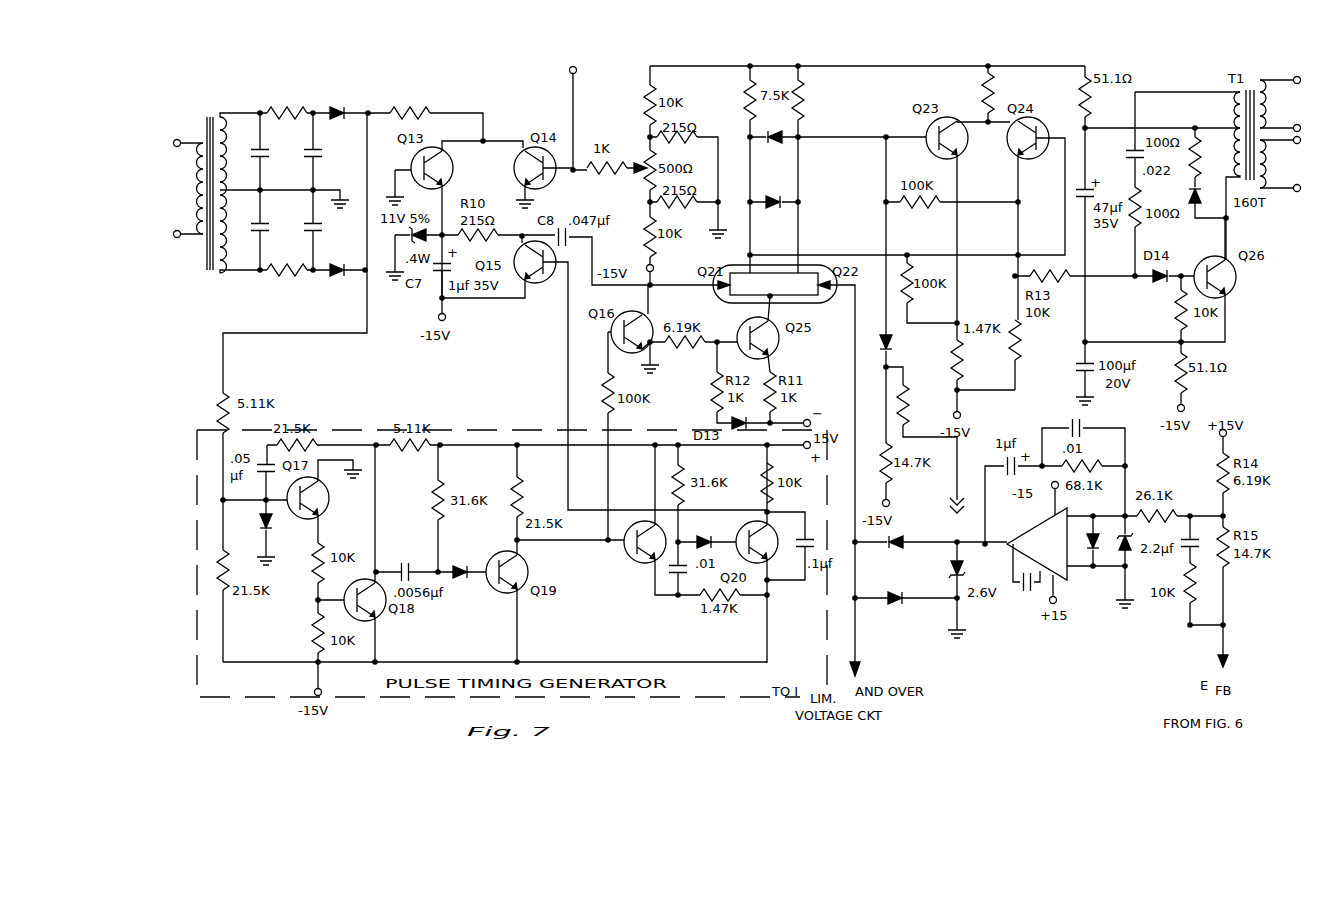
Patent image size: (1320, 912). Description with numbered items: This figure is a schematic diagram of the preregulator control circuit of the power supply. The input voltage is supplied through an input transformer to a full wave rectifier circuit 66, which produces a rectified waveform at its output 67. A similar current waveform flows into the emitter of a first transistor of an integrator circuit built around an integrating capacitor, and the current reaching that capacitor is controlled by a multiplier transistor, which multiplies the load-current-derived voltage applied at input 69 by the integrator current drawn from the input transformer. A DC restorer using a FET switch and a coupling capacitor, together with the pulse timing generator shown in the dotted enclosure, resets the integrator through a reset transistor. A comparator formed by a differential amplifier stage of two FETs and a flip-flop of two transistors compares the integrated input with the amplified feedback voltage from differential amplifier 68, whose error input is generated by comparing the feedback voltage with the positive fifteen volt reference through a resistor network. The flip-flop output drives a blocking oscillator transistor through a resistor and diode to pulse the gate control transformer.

The full wave rectifier circuit 66 is at (355, 173).
The rectified waveform output 67 is at (369, 110).
The differential amplifier 68 is at (1036, 527).
The input 69 is at (571, 76).